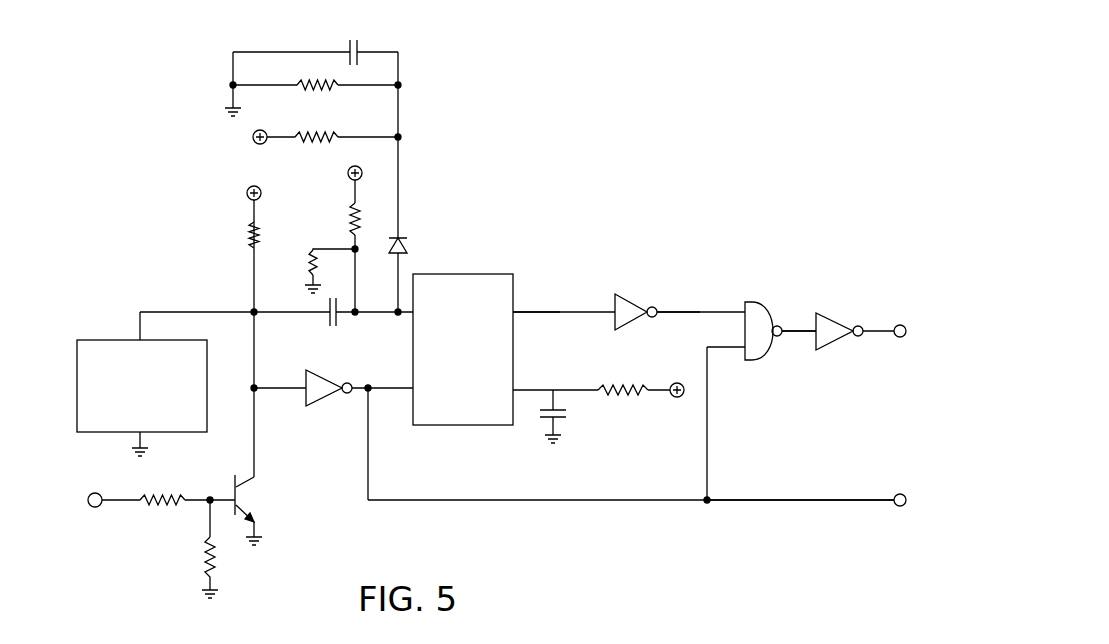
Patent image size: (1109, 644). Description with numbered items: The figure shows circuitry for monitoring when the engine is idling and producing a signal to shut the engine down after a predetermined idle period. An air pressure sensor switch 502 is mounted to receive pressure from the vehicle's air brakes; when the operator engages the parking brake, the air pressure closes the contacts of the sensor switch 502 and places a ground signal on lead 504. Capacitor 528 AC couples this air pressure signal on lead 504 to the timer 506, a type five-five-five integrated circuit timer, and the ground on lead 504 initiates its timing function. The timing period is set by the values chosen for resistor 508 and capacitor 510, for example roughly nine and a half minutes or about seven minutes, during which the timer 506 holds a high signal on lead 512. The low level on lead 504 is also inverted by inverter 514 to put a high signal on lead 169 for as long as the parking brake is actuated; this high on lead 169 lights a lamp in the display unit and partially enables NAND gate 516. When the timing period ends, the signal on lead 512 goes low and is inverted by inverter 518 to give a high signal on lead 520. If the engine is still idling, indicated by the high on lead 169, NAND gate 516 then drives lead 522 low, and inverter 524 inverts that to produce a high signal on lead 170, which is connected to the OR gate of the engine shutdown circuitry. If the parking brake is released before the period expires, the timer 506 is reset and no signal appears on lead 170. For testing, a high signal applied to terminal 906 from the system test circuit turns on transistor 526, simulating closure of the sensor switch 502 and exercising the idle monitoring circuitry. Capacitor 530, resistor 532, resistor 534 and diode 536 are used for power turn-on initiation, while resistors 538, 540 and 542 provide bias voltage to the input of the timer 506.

The air pressure sensor switch 502 is at (76, 372).
The lead 504 is at (192, 311).
The timer 506 is at (466, 274).
The resistor 508 is at (612, 386).
The capacitor 510 is at (568, 418).
The lead 512 is at (527, 311).
The inverter 514 is at (320, 372).
The NAND gate 516 is at (752, 302).
The inverter 518 is at (622, 292).
The lead 520 is at (668, 311).
The lead 522 is at (790, 333).
The inverter 524 is at (822, 312).
The transistor 526 is at (245, 496).
The capacitor 528 is at (330, 322).
The capacitor 530 is at (363, 48).
The resistor 532 is at (322, 88).
The resistor 534 is at (330, 140).
The diode 536 is at (410, 244).
The resistor 538 is at (248, 233).
The resistor 540 is at (350, 226).
The resistor 542 is at (310, 268).
The lead 169 is at (775, 499).
The lead 170 is at (867, 326).
The terminal 906 is at (88, 500).